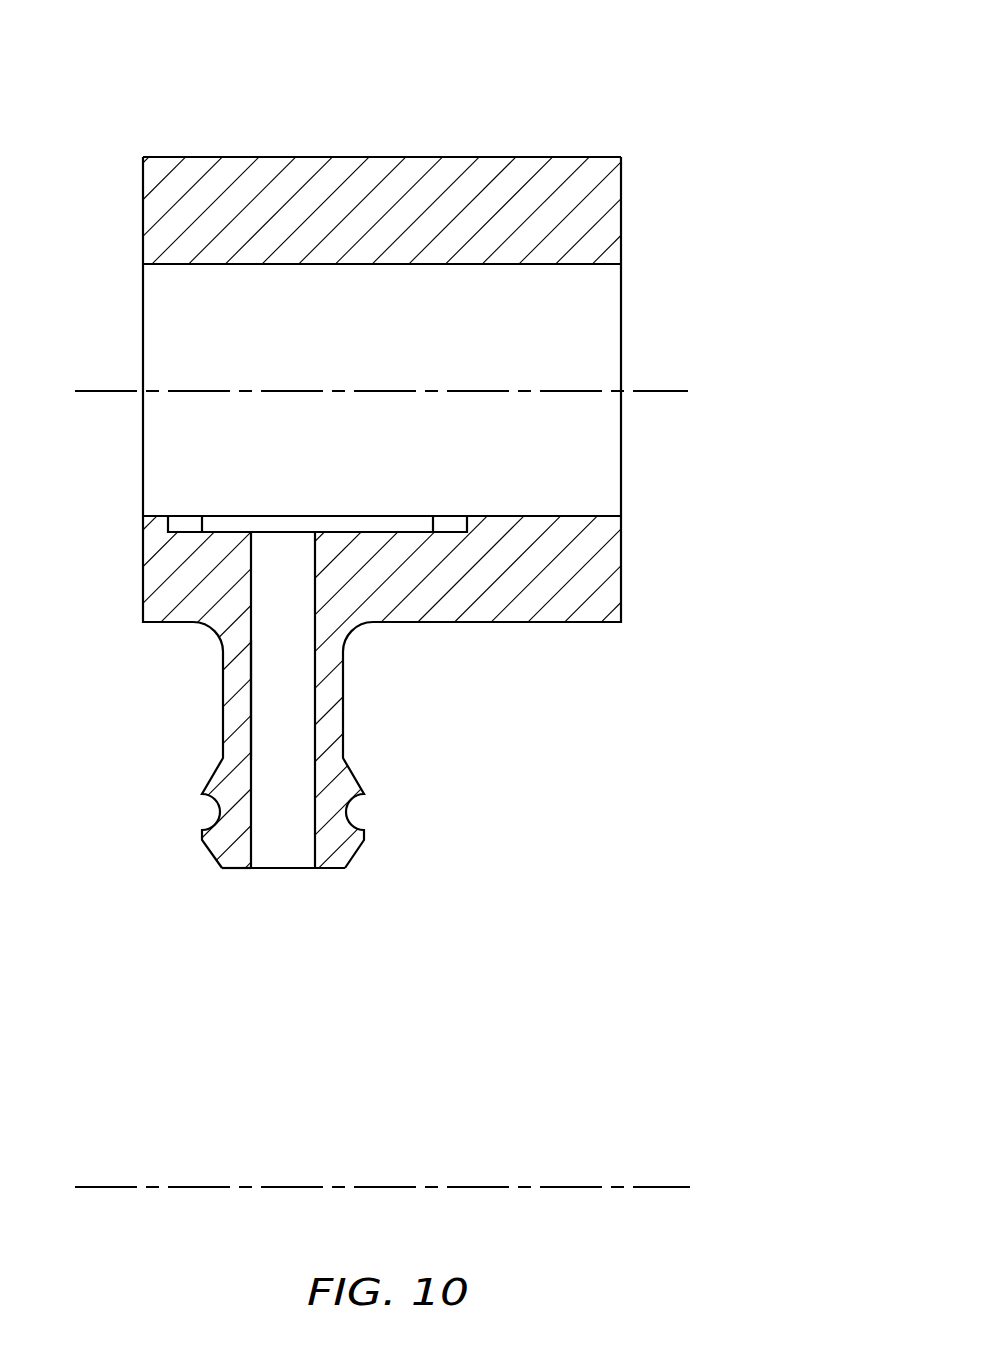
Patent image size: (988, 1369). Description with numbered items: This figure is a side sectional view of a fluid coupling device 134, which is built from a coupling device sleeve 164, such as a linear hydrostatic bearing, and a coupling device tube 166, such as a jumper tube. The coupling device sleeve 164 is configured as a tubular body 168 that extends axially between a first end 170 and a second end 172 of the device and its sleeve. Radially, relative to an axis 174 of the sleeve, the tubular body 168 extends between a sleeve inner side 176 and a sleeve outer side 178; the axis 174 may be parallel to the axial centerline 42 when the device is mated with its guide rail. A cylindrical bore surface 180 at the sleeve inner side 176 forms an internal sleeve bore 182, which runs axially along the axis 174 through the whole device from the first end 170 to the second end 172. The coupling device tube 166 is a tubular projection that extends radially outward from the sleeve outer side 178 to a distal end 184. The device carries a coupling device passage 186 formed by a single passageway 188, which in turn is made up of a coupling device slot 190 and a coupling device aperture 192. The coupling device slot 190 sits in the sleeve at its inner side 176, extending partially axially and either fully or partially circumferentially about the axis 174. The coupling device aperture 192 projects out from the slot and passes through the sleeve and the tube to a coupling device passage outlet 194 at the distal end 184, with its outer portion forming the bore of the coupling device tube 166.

The fluid coupling device 134 is at (178, 99).
The coupling device sleeve 164 is at (382, 105).
The tubular body 168 is at (528, 150).
The first end 170 is at (143, 210).
The second end 172 is at (622, 213).
The axis 174 is at (675, 391).
The sleeve inner side 176 is at (590, 516).
The sleeve outer side 178 is at (595, 622).
The bore surface 180 is at (504, 516).
The sleeve bore 182 is at (588, 334).
The coupling device slot 190 is at (217, 525).
The coupling device tube 166 is at (200, 749).
The distal end 184 is at (236, 868).
The coupling device passage 186 is at (367, 700).
The passageway 188 is at (293, 708).
The coupling device aperture 192 is at (278, 690).
The coupling device passage outlet 194 is at (296, 868).
The axial centerline 42 is at (665, 1187).